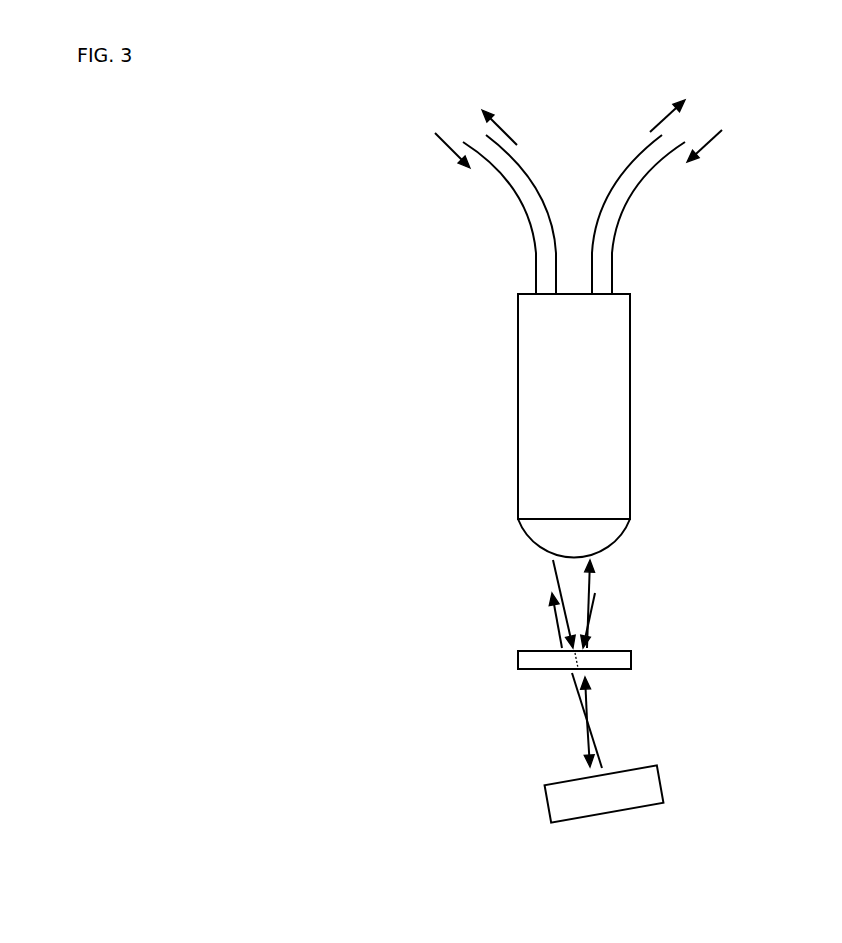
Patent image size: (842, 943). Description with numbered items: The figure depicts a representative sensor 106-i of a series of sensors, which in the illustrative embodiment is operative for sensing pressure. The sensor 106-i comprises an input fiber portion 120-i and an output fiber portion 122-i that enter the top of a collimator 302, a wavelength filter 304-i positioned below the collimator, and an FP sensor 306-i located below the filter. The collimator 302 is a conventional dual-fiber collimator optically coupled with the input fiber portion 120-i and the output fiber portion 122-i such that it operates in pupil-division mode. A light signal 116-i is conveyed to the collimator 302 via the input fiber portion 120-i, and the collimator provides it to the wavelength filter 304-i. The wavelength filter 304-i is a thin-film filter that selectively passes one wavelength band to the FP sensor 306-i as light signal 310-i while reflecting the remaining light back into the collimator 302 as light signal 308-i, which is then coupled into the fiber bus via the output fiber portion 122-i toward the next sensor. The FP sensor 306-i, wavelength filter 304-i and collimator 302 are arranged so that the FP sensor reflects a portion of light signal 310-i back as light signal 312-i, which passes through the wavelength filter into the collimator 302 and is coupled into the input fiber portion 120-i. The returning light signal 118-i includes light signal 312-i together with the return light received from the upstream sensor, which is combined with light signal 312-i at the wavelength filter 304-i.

The sensor 106-i is at (260, 171).
The collimator 302 is at (632, 443).
The wavelength filter 304-i is at (633, 660).
The FP sensor 306-i is at (668, 778).
The light signal 308-i is at (597, 578).
The light signal 310-i is at (575, 703).
The light signal 312-i is at (560, 633).
The light signal 116-i is at (560, 582).
The light signal 118-i is at (518, 119).
The input fiber portion 120-i is at (535, 262).
The output fiber portion 122-i is at (612, 262).